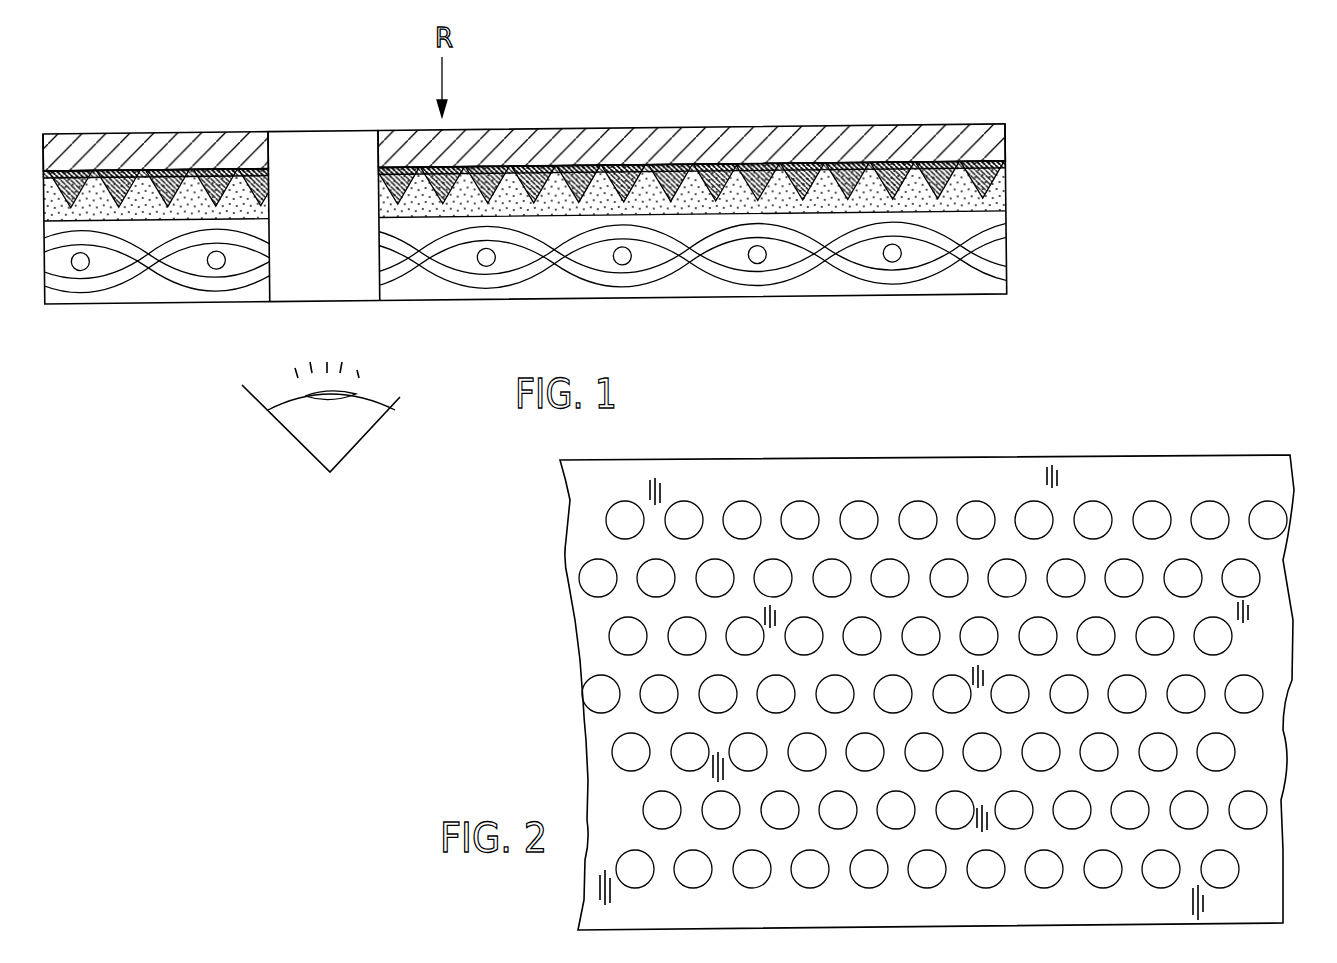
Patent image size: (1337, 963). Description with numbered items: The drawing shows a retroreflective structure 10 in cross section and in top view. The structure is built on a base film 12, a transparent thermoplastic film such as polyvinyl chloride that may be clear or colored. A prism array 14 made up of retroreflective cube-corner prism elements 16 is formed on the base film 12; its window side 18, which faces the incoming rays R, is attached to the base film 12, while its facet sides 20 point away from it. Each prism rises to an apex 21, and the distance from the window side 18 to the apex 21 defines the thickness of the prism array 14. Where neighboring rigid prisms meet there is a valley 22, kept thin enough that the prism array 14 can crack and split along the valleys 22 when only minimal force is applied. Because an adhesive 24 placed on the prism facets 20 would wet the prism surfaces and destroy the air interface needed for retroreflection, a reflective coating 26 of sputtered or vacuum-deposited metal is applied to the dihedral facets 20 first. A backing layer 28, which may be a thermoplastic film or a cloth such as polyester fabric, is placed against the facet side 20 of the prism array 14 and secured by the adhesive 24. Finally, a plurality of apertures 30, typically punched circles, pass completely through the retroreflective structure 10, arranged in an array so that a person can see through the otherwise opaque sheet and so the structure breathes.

In FIG. 2, the retroreflective structure 10 is at (1242, 455).
In FIG. 1, the base film 12 is at (1007, 142).
In FIG. 1, the prism array 14 is at (660, 163).
In FIG. 1, the retroreflective cube-corner prism elements 16 is at (492, 165).
In FIG. 1, the window side 18 is at (760, 165).
In FIG. 1, the facet sides 20 is at (740, 180).
In FIG. 1, the apex 21 is at (943, 183).
In FIG. 1, the valley 22 is at (873, 183).
In FIG. 1, the adhesive 24 is at (1010, 197).
In FIG. 1, the reflective coating 26 is at (378, 200).
In FIG. 1, the backing layer 28 is at (145, 305).
In FIG. 1, the apertures 30 is at (288, 165).
In FIG. 2, the apertures 30 is at (1150, 501).